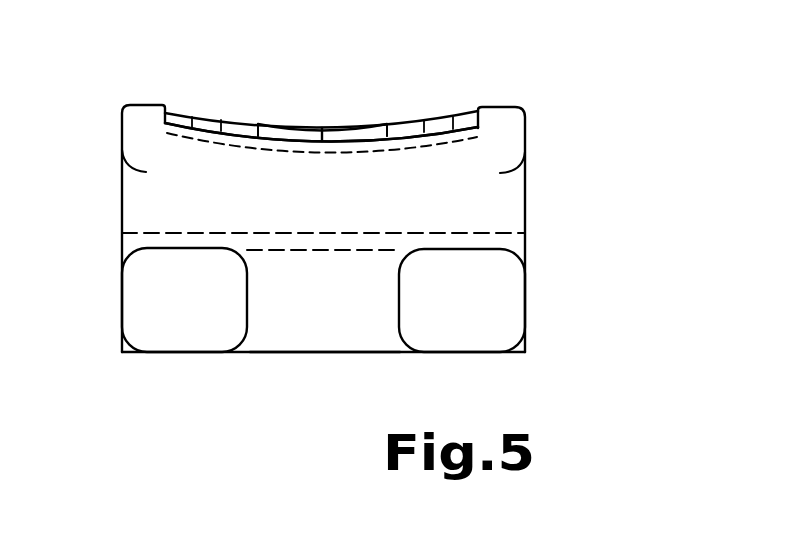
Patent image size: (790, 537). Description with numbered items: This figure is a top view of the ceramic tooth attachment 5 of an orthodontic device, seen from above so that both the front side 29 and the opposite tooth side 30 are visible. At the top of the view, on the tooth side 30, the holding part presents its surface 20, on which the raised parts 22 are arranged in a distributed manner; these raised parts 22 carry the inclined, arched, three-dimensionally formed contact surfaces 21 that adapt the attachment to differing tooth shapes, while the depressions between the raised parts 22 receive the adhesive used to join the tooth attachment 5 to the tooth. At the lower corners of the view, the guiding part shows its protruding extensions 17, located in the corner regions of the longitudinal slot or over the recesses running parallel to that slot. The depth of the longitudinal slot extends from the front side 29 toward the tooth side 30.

The tooth attachment 5 is at (622, 130).
The protruding extensions 17 is at (142, 312).
The surface of the holding part 20 is at (305, 104).
The contact surface 21 is at (281, 123).
The raised parts 22 is at (237, 121).
The front side 29 is at (317, 382).
The tooth side 30 is at (343, 104).